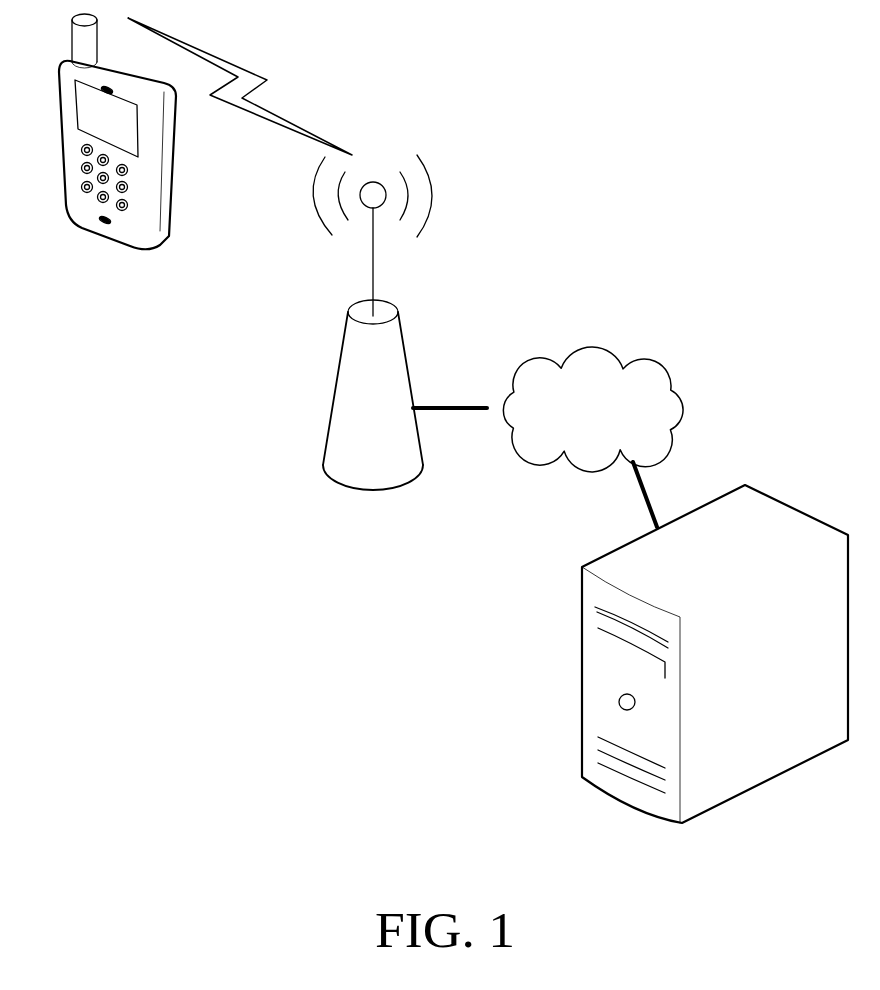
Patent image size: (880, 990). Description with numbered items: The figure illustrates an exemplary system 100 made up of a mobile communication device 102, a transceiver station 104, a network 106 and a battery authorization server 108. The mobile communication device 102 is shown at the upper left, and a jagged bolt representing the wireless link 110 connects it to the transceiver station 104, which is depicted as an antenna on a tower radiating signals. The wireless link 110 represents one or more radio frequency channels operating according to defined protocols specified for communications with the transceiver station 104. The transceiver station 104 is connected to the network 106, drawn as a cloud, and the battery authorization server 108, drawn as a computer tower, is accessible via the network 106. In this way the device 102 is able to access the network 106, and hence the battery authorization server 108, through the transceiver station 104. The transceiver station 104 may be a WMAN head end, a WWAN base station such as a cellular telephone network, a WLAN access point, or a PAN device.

The system 100 is at (633, 103).
The mobile communication device 102 is at (180, 187).
The transceiver station 104 is at (332, 408).
The network 106 is at (592, 343).
The battery authorization server 108 is at (582, 673).
The wireless link 110 is at (233, 62).